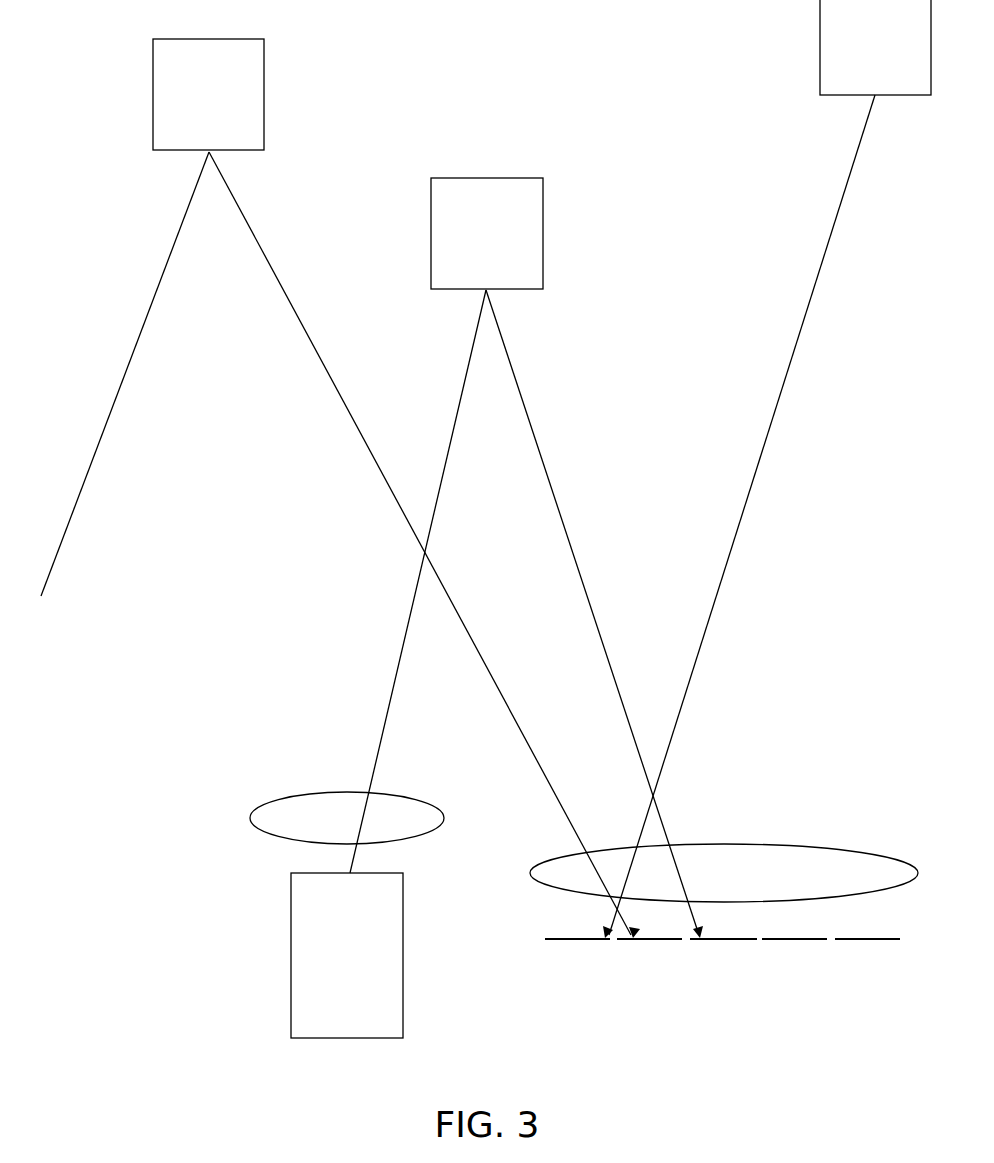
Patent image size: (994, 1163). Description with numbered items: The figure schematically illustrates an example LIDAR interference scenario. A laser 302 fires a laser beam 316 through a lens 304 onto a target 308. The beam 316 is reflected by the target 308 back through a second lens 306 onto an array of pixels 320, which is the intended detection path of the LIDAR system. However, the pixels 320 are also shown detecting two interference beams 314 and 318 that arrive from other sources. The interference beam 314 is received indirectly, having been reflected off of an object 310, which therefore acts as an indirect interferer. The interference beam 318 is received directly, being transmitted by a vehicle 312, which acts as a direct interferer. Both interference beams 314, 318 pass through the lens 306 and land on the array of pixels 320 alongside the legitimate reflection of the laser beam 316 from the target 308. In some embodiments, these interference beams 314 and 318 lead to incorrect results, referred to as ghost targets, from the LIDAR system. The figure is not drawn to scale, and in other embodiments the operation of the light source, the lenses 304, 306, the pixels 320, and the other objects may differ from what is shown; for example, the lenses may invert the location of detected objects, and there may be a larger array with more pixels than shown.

The laser 302 is at (347, 955).
The lens 304 is at (414, 833).
The lens 306 is at (814, 888).
The target 308 is at (463, 265).
The object 310 is at (392, 487).
The vehicle 312 is at (875, 47).
The interference beam 314 is at (112, 408).
The laser beam 316 is at (540, 438).
The interference beam 318 is at (800, 328).
The array of pixels 320 is at (722, 952).